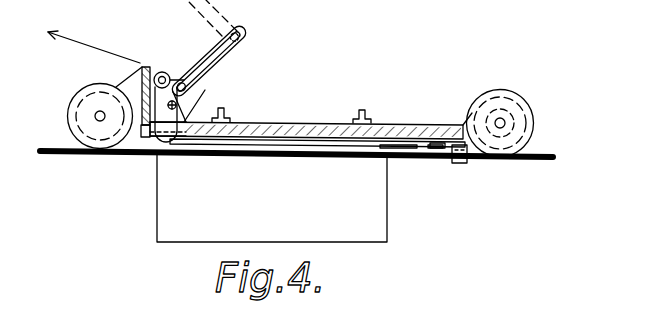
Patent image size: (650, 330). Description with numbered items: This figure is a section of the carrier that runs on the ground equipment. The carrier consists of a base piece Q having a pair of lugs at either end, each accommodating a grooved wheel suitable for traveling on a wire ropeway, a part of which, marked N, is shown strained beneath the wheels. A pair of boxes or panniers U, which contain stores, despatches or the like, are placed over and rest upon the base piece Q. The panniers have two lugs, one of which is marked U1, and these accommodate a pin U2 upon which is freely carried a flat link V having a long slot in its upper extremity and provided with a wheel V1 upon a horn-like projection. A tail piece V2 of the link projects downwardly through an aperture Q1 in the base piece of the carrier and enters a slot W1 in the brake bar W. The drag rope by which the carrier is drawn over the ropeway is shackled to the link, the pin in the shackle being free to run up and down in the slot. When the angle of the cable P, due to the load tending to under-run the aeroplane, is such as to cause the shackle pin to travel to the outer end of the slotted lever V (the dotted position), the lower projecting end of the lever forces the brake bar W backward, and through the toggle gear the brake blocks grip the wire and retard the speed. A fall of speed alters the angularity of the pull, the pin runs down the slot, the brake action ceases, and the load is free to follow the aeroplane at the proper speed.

The ropeway N is at (541, 153).
The cable P is at (74, 41).
The brake bar W is at (148, 147).
The tail piece V2 is at (167, 150).
The slot in the brake bar W1 is at (193, 150).
The wheel V1 is at (163, 72).
The pin U2 is at (173, 100).
The flat link V is at (232, 60).
The lug U1 is at (183, 108).
The base piece Q is at (408, 131).
The aperture in the base piece Q1 is at (214, 106).
The boxes or panniers U is at (387, 207).